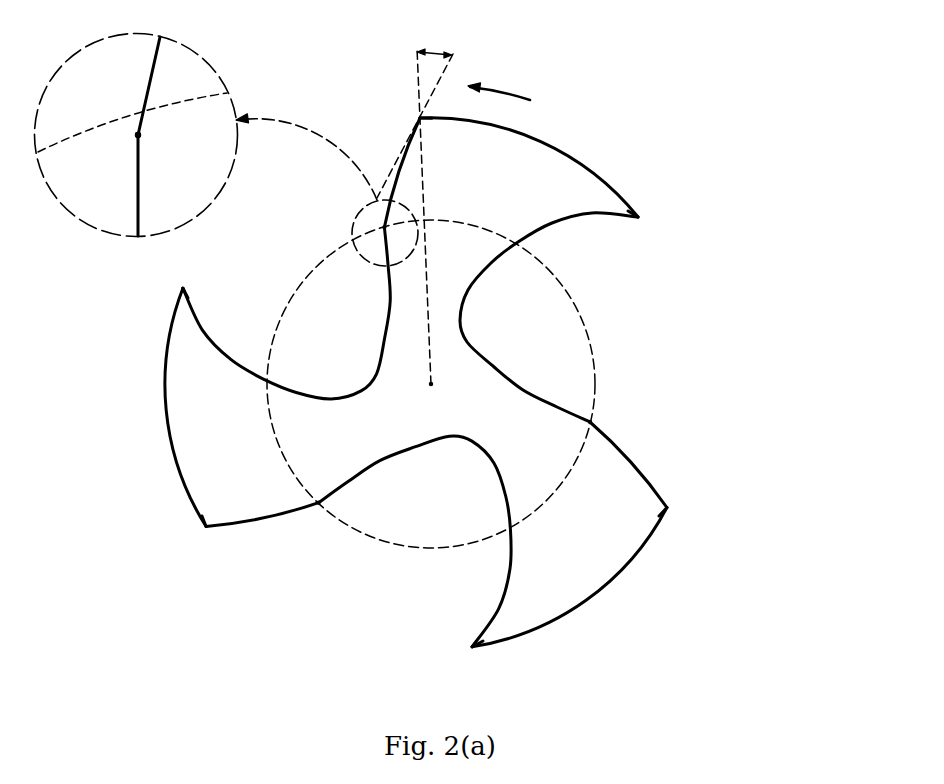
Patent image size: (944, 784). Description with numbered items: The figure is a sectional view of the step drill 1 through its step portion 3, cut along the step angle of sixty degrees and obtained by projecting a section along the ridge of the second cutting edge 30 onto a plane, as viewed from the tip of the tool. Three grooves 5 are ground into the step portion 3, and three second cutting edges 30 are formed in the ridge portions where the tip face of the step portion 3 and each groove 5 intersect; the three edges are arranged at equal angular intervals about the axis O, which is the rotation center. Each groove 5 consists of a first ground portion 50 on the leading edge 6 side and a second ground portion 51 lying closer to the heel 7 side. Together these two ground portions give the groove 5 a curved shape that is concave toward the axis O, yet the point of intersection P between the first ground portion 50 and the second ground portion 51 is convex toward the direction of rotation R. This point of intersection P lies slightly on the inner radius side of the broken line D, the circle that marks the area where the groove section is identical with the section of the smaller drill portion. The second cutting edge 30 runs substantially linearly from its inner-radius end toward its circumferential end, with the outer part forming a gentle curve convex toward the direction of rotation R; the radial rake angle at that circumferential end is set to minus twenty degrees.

The step drill 1 is at (470, 347).
The step portion 3 is at (556, 127).
The groove 5 is at (393, 342).
The leading edge 6 is at (418, 117).
The heel 7 is at (640, 218).
The second cutting edge 30 is at (405, 150).
The first ground portion 50 is at (590, 421).
The second ground portion 51 is at (490, 264).
The broken line D is at (592, 350).
The axis O is at (435, 386).
The point of intersection P is at (139, 135).
The direction of rotation R is at (520, 95).